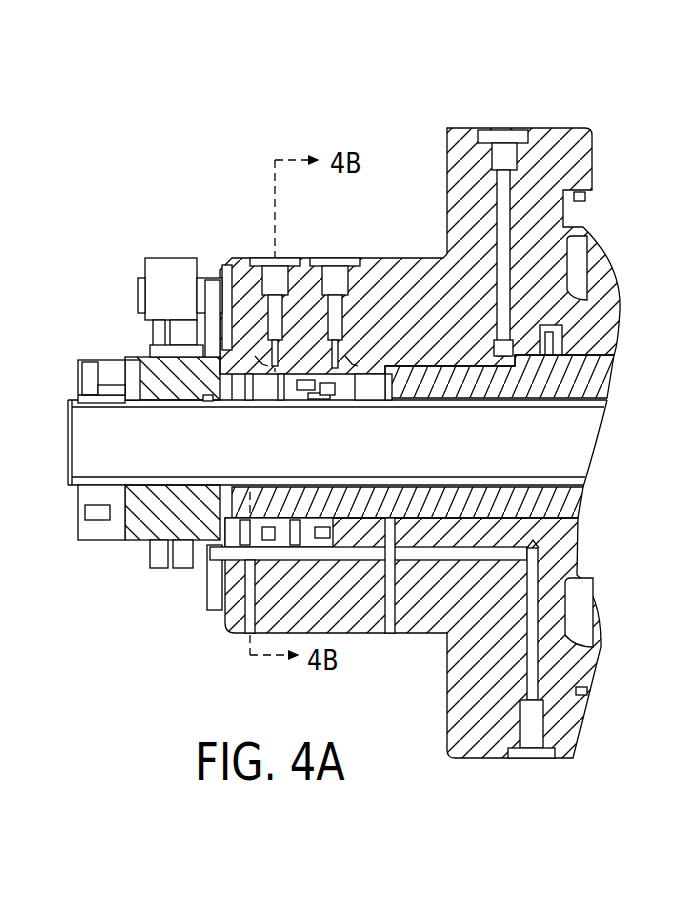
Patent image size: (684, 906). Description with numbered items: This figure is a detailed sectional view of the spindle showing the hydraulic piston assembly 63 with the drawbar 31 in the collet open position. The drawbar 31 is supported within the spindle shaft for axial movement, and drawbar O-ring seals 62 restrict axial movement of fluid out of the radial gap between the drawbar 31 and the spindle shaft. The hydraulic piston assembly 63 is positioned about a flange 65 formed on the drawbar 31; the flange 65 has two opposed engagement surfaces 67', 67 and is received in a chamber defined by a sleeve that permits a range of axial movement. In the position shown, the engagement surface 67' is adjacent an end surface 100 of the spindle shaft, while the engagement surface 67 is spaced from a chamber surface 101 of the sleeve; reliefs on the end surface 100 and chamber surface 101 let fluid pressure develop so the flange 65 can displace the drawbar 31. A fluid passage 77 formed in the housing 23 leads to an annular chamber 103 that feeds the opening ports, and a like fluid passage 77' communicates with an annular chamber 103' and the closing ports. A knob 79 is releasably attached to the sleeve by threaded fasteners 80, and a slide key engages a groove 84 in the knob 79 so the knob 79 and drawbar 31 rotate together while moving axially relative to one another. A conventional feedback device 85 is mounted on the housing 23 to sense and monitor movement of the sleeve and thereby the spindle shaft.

The housing 23 is at (550, 126).
The drawbar 31 is at (540, 405).
The drawbar O-ring seals 62 is at (203, 402).
The hydraulic piston assembly 63 is at (222, 293).
The flange 65 is at (318, 400).
The engagement surface 67 is at (303, 424).
The engagement surface 67' is at (352, 415).
The fluid passage 77 is at (268, 266).
The fluid passage 77' is at (342, 281).
The knob 79 is at (83, 500).
The threaded fasteners 80 is at (85, 377).
The groove 84 is at (110, 388).
The feedback device 85 is at (163, 265).
The end surface 100 is at (393, 403).
The chamber surface 101 is at (275, 376).
The annular chamber 103 is at (235, 281).
The annular chamber 103' is at (397, 283).